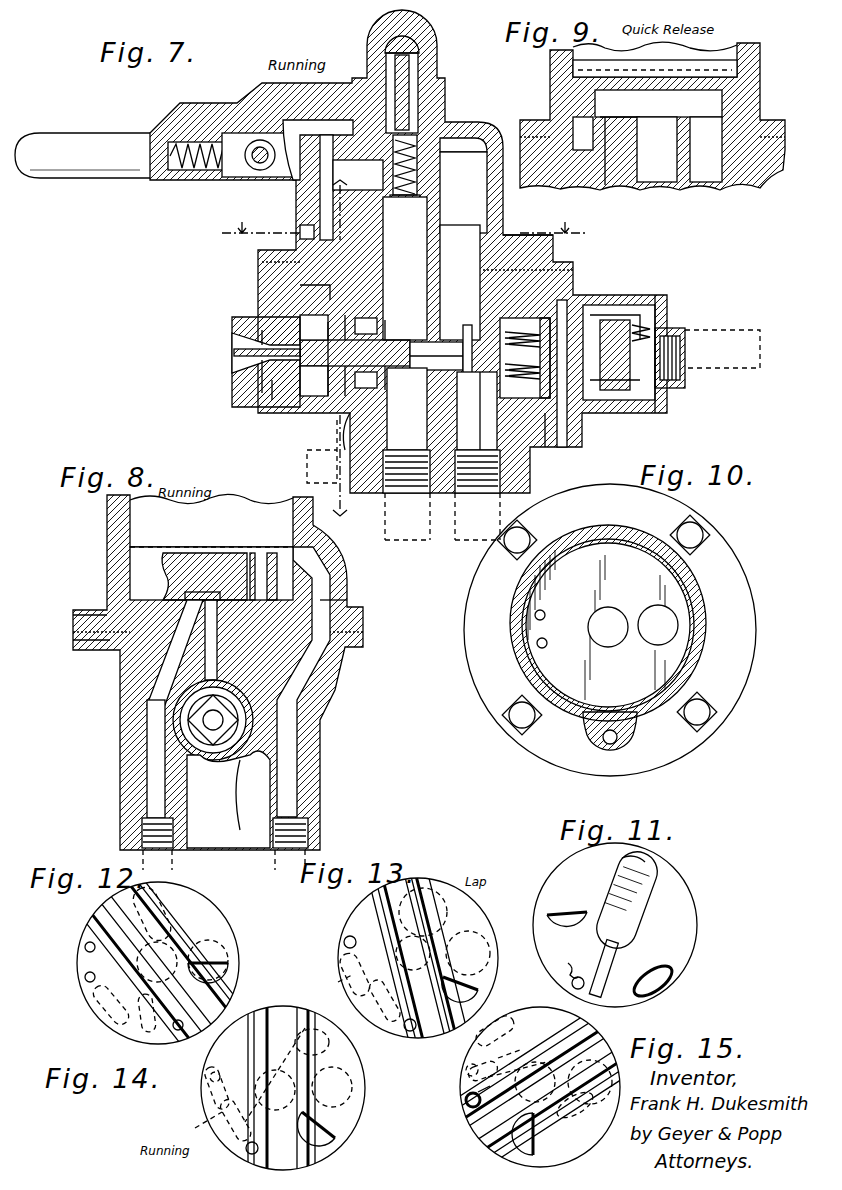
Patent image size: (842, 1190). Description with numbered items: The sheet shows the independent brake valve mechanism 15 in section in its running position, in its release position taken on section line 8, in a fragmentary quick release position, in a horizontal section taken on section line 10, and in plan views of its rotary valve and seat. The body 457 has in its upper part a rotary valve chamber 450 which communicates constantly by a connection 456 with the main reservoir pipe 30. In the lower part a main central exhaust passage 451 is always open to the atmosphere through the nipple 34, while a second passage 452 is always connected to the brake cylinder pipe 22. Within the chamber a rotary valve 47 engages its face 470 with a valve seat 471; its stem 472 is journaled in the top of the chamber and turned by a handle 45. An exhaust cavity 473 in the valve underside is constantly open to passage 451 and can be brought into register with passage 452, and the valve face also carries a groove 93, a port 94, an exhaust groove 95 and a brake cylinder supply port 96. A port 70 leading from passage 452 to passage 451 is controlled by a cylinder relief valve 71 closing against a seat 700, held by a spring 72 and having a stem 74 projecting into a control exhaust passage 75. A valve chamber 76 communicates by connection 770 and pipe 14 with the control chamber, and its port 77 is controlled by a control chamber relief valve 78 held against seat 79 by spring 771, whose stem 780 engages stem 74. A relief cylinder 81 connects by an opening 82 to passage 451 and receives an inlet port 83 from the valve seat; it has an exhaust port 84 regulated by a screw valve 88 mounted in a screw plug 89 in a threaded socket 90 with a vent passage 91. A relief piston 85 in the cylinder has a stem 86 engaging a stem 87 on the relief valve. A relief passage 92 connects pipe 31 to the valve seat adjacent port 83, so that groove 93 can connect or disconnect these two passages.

In FIG. 7, the section line 8— 8 is at (351, 330).
In FIG. 7, the section line 10— 10 is at (405, 232).
In FIG. 7, the pipe 14 is at (758, 328).
In FIG. 7, the independent brake valve mechanism 15 is at (408, 251).
In FIG. 9, the independent brake valve mechanism 15 is at (659, 116).
In FIG. 8, the independent brake valve mechanism 15 is at (218, 672).
In FIG. 10, the independent brake valve mechanism 15 is at (625, 630).
In FIG. 7, the brake cylinder pipe 22 is at (473, 524).
In FIG. 8, the main reservoir pipe 30 is at (251, 852).
In FIG. 8, the pipe 31 is at (172, 846).
In FIG. 7, the nipple 34 is at (407, 524).
In FIG. 7, the handle 45 is at (222, 110).
In FIG. 7, the rotary valve 47 is at (442, 197).
In FIG. 9, the rotary valve 47 is at (750, 108).
In FIG. 8, the rotary valve 47 is at (130, 562).
In FIG. 11, the rotary valve 47 is at (692, 938).
In FIG. 12, the rotary valve 47 is at (138, 1040).
In FIG. 13, the rotary valve 47 is at (365, 902).
In FIG. 14, the rotary valve 47 is at (283, 1088).
In FIG. 15, the rotary valve 47 is at (515, 1160).
In FIG. 7, the port 70 is at (458, 312).
In FIG. 7, the cylinder relief valve 71 is at (474, 411).
In FIG. 7, the spring 72 is at (482, 411).
In FIG. 7, the stem 74 is at (542, 448).
In FIG. 7, the control exhaust passage 75 is at (563, 448).
In FIG. 7, the valve chamber 76 is at (627, 413).
In FIG. 7, the port 77 is at (595, 413).
In FIG. 7, the control chamber relief valve 78 is at (594, 308).
In FIG. 7, the seat 79 is at (603, 302).
In FIG. 7, the relief cylinder 81 is at (272, 400).
In FIG. 8, the relief cylinder 81 is at (232, 796).
In FIG. 7, the opening 82 is at (380, 330).
In FIG. 7, the inlet port 83 is at (300, 287).
In FIG. 8, the inlet port 83 is at (210, 662).
In FIG. 10, the inlet port 83 is at (537, 643).
In FIG. 12, the inlet port 83 is at (86, 980).
In FIG. 13, the inlet port 83 is at (330, 982).
In FIG. 14, the inlet port 83 is at (195, 1124).
In FIG. 15, the inlet port 83 is at (470, 1098).
In FIG. 7, the exhaust port 84 is at (300, 330).
In FIG. 7, the relief piston 85 is at (330, 420).
In FIG. 8, the relief piston 85 is at (218, 770).
In FIG. 7, the stem 86 is at (412, 398).
In FIG. 7, the stem 87 is at (405, 431).
In FIG. 7, the screw valve 88 is at (262, 368).
In FIG. 7, the screw plug 89 is at (240, 385).
In FIG. 7, the threaded socket 90 is at (240, 400).
In FIG. 7, the vent passage 91 is at (232, 352).
In FIG. 7, the relief passage 92 is at (307, 468).
In FIG. 9, the relief passage 92 is at (610, 184).
In FIG. 8, the relief passage 92 is at (147, 724).
In FIG. 10, the relief passage 92 is at (535, 615).
In FIG. 12, the relief passage 92 is at (86, 942).
In FIG. 13, the relief passage 92 is at (344, 941).
In FIG. 14, the relief passage 92 is at (209, 1076).
In FIG. 15, the relief passage 92 is at (466, 1070).
In FIG. 7, the groove 93 is at (303, 228).
In FIG. 8, the groove 93 is at (185, 596).
In FIG. 11, the groove 93 is at (675, 985).
In FIG. 12, the groove 93 is at (100, 1020).
In FIG. 13, the groove 93 is at (346, 960).
In FIG. 14, the groove 93 is at (208, 1095).
In FIG. 15, the groove 93 is at (470, 1060).
In FIG. 8, the port 94 is at (252, 555).
In FIG. 11, the port 94 is at (570, 966).
In FIG. 12, the port 94 is at (178, 1030).
In FIG. 13, the port 94 is at (406, 1030).
In FIG. 14, the port 94 is at (247, 1153).
In FIG. 15, the port 94 is at (466, 1104).
In FIG. 9, the exhaust groove 95 is at (630, 117).
In FIG. 8, the exhaust groove 95 is at (210, 598).
In FIG. 11, the exhaust groove 95 is at (612, 975).
In FIG. 12, the exhaust groove 95 is at (138, 1013).
In FIG. 13, the exhaust groove 95 is at (384, 994).
In FIG. 14, the exhaust groove 95 is at (235, 1113).
In FIG. 15, the exhaust groove 95 is at (507, 1048).
In FIG. 8, the brake cylinder supply port 96 is at (272, 555).
In FIG. 11, the brake cylinder supply port 96 is at (565, 912).
In FIG. 12, the brake cylinder supply port 96 is at (228, 965).
In FIG. 13, the brake cylinder supply port 96 is at (480, 990).
In FIG. 14, the brake cylinder supply port 96 is at (336, 1140).
In FIG. 15, the brake cylinder supply port 96 is at (534, 1136).
In FIG. 7, the rotary valve chamber 450 is at (497, 130).
In FIG. 9, the rotary valve chamber 450 is at (735, 50).
In FIG. 8, the rotary valve chamber 450 is at (108, 520).
In FIG. 7, the main central exhaust passage 451 is at (406, 481).
In FIG. 9, the main central exhaust passage 451 is at (572, 120).
In FIG. 10, the main central exhaust passage 451 is at (607, 640).
In FIG. 12, the main central exhaust passage 451 is at (140, 970).
In FIG. 13, the main central exhaust passage 451 is at (430, 945).
In FIG. 14, the main central exhaust passage 451 is at (262, 1078).
In FIG. 15, the main central exhaust passage 451 is at (520, 1042).
In FIG. 7, the passage 452 is at (477, 481).
In FIG. 9, the passage 452 is at (710, 183).
In FIG. 10, the passage 452 is at (656, 612).
In FIG. 12, the passage 452 is at (220, 942).
In FIG. 13, the passage 452 is at (490, 955).
In FIG. 14, the passage 452 is at (352, 1089).
In FIG. 15, the passage 452 is at (606, 1072).
In FIG. 8, the connection 456 is at (312, 690).
In FIG. 10, the connection 456 is at (618, 740).
In FIG. 7, the body 457 is at (510, 235).
In FIG. 8, the body 457 is at (340, 612).
In FIG. 8, the face 470 is at (107, 614).
In FIG. 11, the face 470 is at (635, 900).
In FIG. 8, the valve seat 471 is at (75, 640).
In FIG. 7, the stem 472 is at (430, 96).
In FIG. 9, the exhaust cavity 473 is at (658, 102).
In FIG. 11, the exhaust cavity 473 is at (660, 872).
In FIG. 12, the exhaust cavity 473 is at (168, 910).
In FIG. 13, the exhaust cavity 473 is at (400, 915).
In FIG. 14, the exhaust cavity 473 is at (287, 1075).
In FIG. 15, the exhaust cavity 473 is at (576, 1108).
In FIG. 7, the seat 700 is at (452, 333).
In FIG. 7, the connection 770 is at (686, 366).
In FIG. 7, the spring 771 is at (660, 305).
In FIG. 7, the stem 780 is at (583, 300).